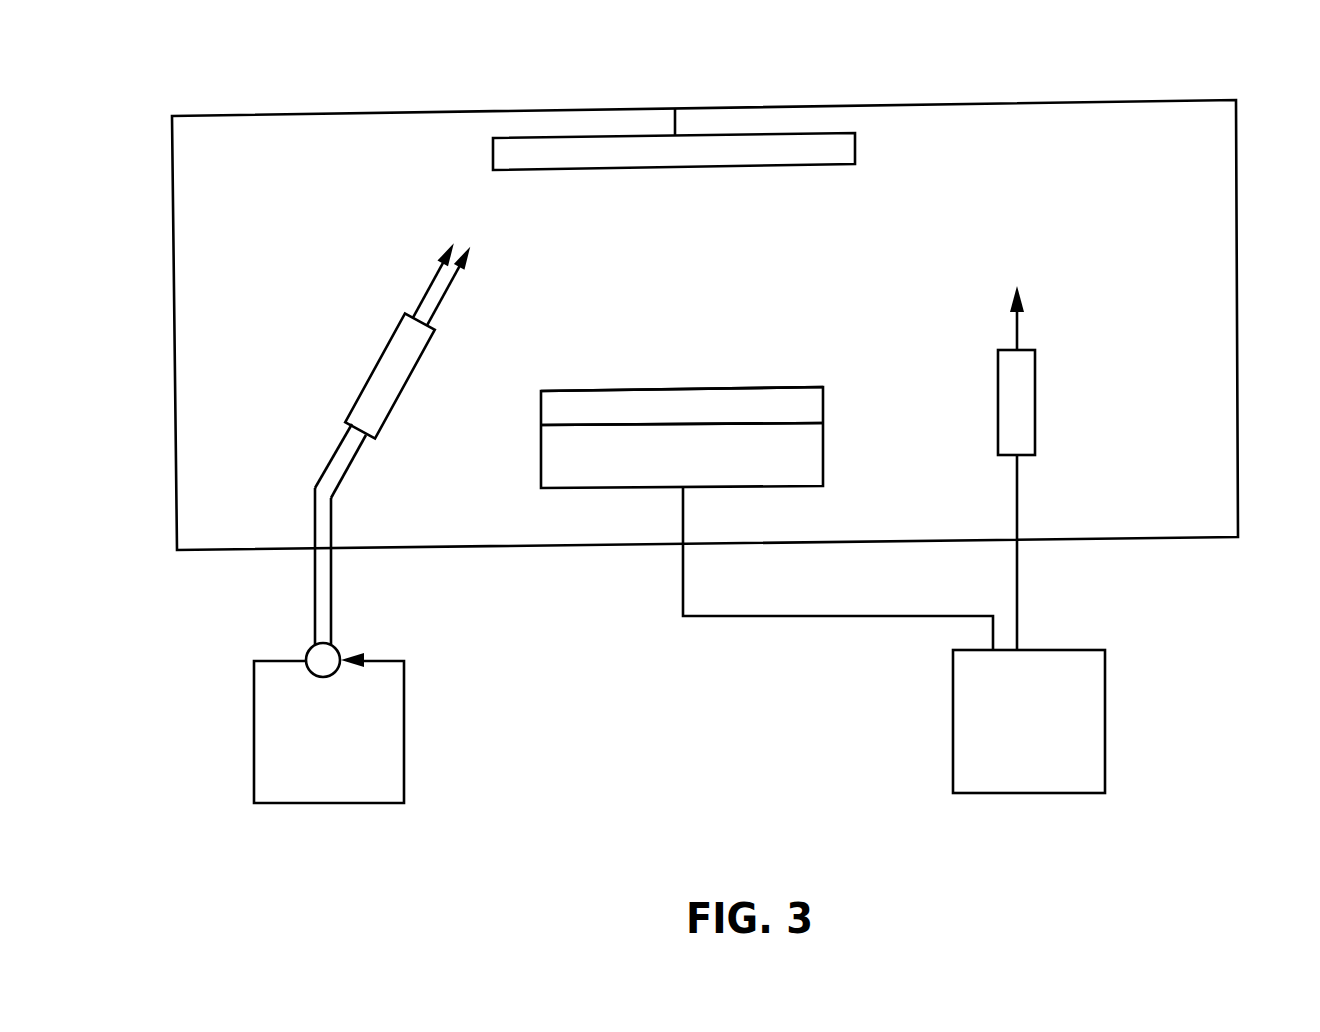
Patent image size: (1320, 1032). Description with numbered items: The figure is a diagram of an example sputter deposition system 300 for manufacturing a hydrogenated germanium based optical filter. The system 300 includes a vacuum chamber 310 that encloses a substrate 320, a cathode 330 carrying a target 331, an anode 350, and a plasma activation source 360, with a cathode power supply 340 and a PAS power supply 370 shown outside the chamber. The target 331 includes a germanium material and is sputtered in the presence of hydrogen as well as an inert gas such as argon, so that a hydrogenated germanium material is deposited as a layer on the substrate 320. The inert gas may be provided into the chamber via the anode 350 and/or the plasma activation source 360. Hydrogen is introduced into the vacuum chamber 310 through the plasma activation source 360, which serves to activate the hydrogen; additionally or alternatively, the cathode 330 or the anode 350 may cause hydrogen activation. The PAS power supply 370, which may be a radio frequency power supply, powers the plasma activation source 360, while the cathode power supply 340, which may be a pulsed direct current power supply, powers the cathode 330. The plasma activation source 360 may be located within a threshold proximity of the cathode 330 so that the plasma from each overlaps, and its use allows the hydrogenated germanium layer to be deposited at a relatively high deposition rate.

The sputter deposition system 300 is at (230, 37).
The vacuum chamber 310 is at (1238, 306).
The substrate 320 is at (857, 150).
The cathode 330 is at (767, 518).
The target 331 is at (825, 400).
The cathode power supply 340 is at (1029, 721).
The anode 350 is at (1037, 398).
The plasma activation source 360 is at (405, 392).
The PAS power supply 370 is at (329, 723).